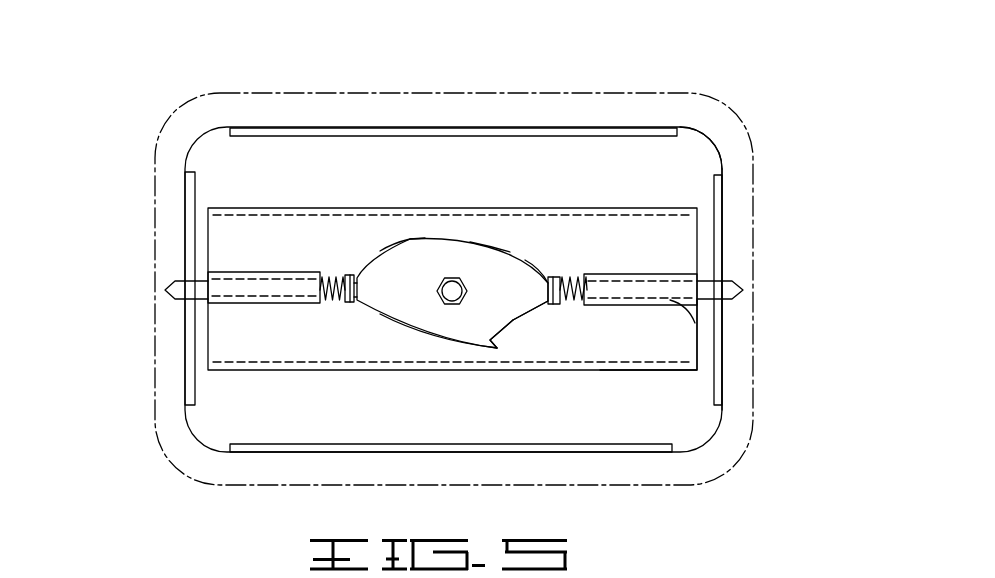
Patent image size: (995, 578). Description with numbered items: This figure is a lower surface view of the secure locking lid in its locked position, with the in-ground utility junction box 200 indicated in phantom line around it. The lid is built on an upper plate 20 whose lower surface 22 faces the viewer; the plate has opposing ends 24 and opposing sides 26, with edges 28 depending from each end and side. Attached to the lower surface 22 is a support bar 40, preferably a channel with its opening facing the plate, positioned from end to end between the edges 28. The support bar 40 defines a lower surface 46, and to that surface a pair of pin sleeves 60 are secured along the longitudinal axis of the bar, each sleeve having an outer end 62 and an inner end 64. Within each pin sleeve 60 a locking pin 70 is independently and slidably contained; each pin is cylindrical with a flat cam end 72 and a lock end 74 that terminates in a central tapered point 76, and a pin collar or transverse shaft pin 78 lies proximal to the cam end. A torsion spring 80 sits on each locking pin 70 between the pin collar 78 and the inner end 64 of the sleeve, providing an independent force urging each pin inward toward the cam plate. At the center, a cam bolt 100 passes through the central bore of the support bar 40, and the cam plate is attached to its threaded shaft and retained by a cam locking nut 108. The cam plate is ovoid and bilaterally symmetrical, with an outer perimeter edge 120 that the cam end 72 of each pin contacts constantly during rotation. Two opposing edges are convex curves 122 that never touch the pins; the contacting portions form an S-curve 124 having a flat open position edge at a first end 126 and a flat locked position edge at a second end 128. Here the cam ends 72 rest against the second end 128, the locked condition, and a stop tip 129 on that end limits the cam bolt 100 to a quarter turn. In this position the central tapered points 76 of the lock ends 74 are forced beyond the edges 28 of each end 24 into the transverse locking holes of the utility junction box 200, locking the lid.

The in-ground utility junction box 200 is at (175, 108).
The upper plate 20 is at (293, 160).
The lower surface 22 is at (702, 155).
The opposing ends 24 is at (722, 383).
The opposing sides 26 is at (630, 453).
The edges 28 is at (658, 130).
The support bar 40 is at (227, 208).
The lower surface 46 is at (668, 353).
The pin sleeves 60 is at (215, 303).
The outer end 62 is at (230, 272).
The inner end 64 is at (595, 273).
The locking pins 70 is at (695, 323).
The cam end 72 is at (349, 303).
The lock end 74 is at (737, 293).
The central tapered point 76 is at (165, 289).
The pin collar or transverse shaft pin 78 is at (346, 275).
The torsion spring 80 is at (320, 303).
The cam bolt 100 is at (455, 295).
The cam locking nut 108 is at (447, 278).
The outer perimeter edge 120 is at (450, 345).
The convex curves 122 is at (492, 255).
The S-curve 124 is at (517, 325).
The first end 126 is at (540, 267).
The second end 128 is at (405, 240).
The stop tip 129 is at (500, 313).